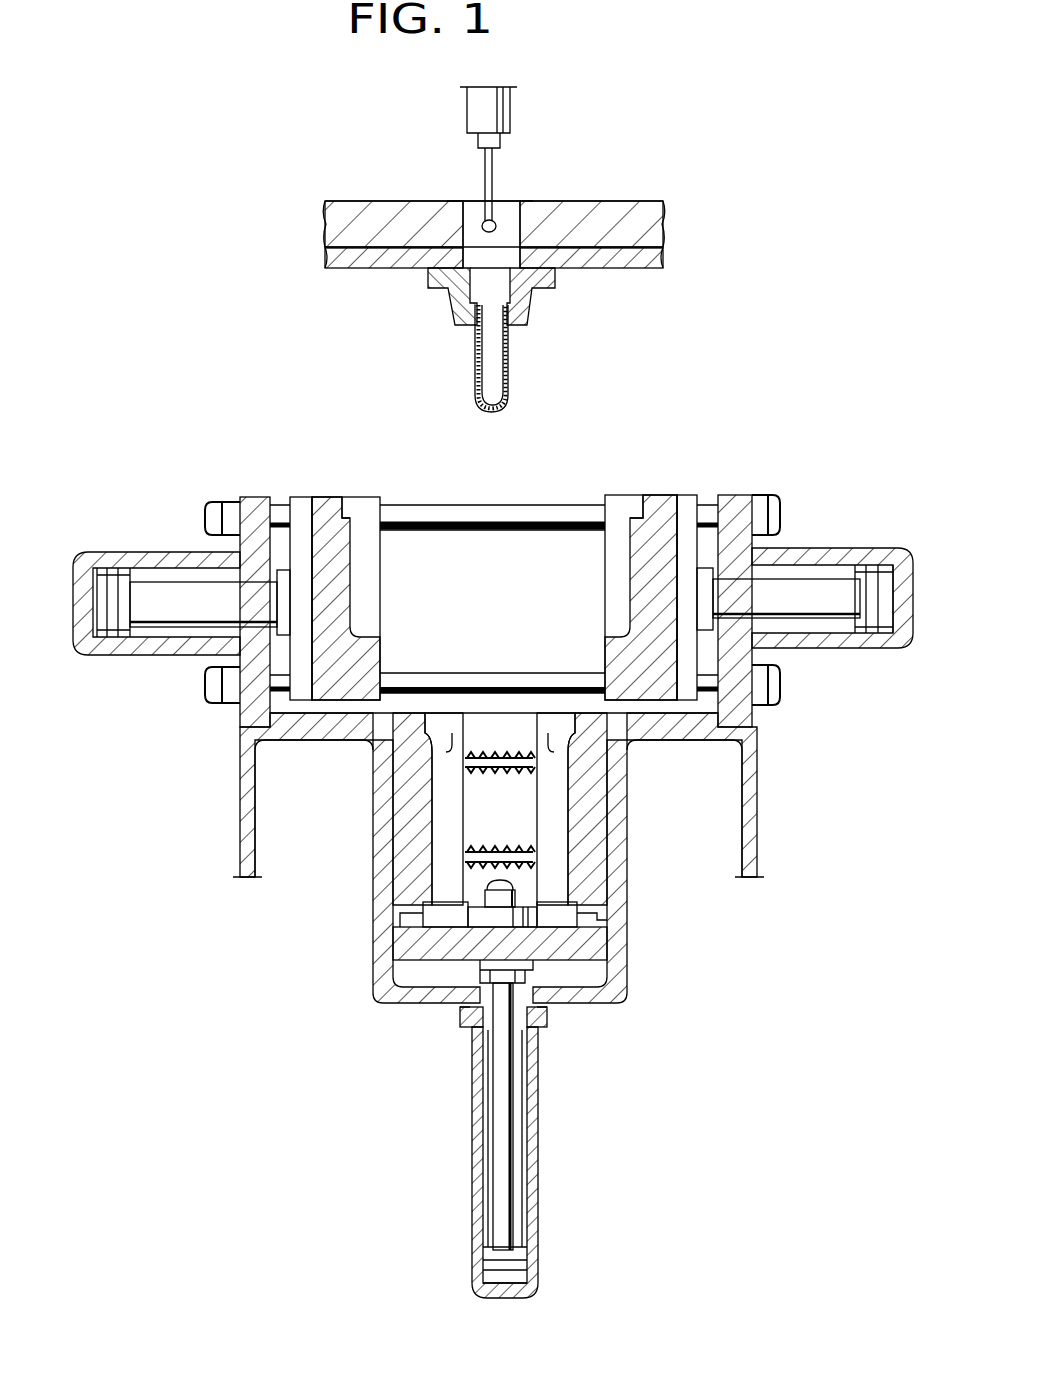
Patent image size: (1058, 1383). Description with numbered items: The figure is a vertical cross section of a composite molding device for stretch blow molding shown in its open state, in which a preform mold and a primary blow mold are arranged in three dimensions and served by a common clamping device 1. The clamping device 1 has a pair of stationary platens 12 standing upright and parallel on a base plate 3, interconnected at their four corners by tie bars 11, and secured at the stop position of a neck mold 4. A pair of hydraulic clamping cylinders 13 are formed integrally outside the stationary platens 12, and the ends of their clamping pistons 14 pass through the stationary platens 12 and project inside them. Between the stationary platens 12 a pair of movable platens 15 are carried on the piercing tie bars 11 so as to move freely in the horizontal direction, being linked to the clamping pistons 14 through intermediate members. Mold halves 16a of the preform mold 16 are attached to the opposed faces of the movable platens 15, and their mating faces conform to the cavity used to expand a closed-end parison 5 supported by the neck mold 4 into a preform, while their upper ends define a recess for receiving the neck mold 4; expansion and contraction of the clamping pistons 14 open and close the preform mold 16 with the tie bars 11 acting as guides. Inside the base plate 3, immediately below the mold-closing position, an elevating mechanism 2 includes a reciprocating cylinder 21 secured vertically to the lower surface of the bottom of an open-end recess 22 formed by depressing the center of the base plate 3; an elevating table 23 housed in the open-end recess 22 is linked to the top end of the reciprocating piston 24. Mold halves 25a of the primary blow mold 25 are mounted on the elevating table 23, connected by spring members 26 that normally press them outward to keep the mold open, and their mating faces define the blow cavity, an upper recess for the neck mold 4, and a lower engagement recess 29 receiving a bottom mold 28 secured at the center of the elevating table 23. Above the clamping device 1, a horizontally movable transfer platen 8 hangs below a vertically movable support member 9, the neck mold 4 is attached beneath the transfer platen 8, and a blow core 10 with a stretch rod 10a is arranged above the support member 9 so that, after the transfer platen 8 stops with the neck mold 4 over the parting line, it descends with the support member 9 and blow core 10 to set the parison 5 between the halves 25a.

The clamping device 1 is at (198, 477).
The elevating mechanism 2 is at (370, 978).
The base plate 3 is at (325, 730).
The neck mold 4 is at (450, 312).
The closed-end parison 5 is at (475, 367).
The transfer platen 8 is at (620, 258).
The support member 9 is at (645, 200).
The blow core 10 is at (497, 105).
The stretch rod 10a is at (483, 172).
The tie bars 11 is at (448, 515).
The stationary platens 12 is at (248, 497).
The hydraulic clamping cylinders 13 is at (113, 650).
The clamping pistons 14 is at (175, 605).
The movable platens 15 is at (298, 497).
The preform mold 16 is at (332, 492).
The preform mold halves 16a is at (372, 595).
The reciprocating cylinder 21 is at (540, 1195).
The open-end recess 22 is at (423, 977).
The elevating table 23 is at (567, 1010).
The reciprocating piston 24 is at (500, 1155).
The primary blow mold 25 is at (393, 830).
The primary blow mold halves 25a is at (412, 895).
The spring members 26 is at (500, 772).
The bottom mold 28 is at (563, 913).
The engagement recess 29 is at (553, 950).